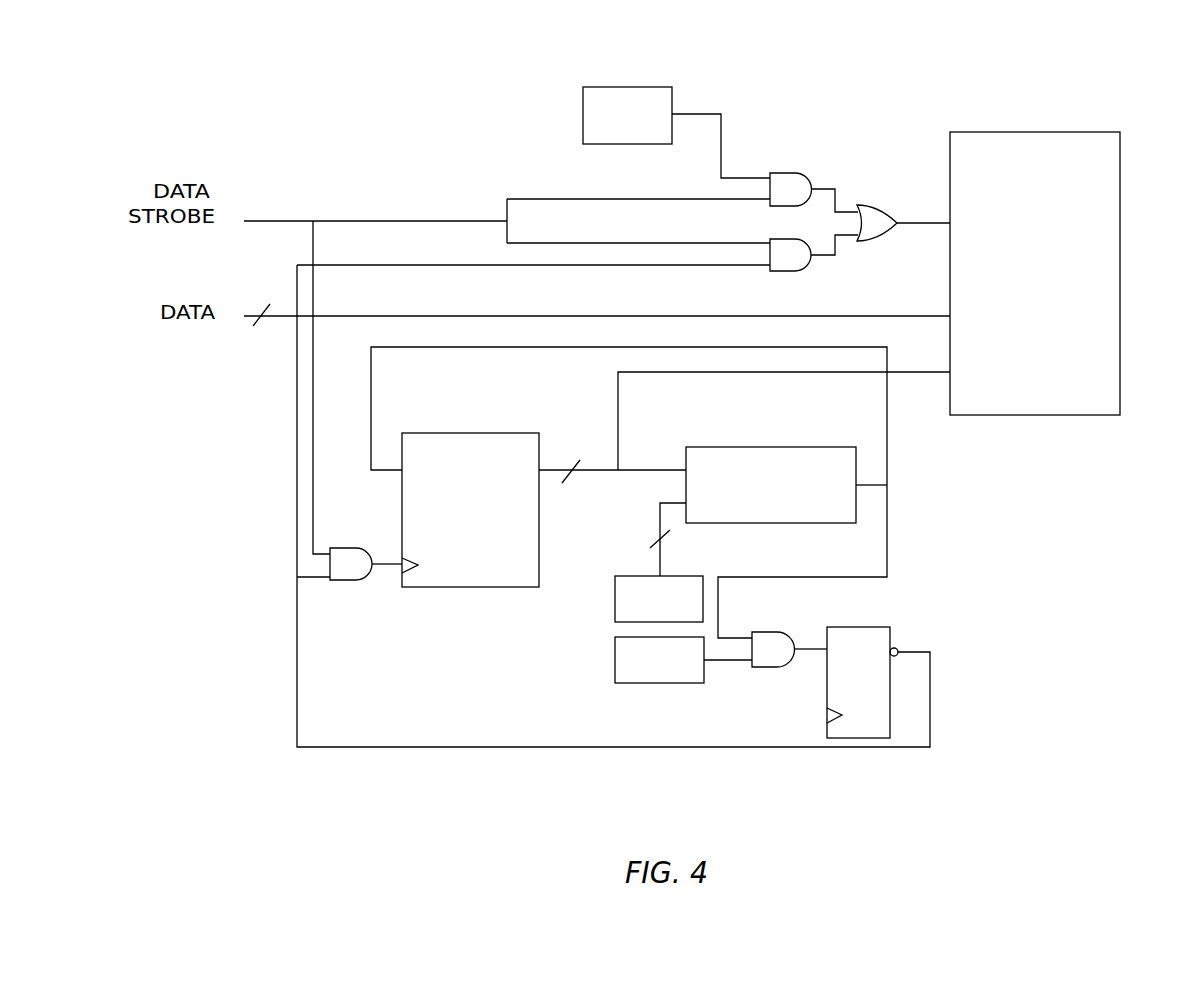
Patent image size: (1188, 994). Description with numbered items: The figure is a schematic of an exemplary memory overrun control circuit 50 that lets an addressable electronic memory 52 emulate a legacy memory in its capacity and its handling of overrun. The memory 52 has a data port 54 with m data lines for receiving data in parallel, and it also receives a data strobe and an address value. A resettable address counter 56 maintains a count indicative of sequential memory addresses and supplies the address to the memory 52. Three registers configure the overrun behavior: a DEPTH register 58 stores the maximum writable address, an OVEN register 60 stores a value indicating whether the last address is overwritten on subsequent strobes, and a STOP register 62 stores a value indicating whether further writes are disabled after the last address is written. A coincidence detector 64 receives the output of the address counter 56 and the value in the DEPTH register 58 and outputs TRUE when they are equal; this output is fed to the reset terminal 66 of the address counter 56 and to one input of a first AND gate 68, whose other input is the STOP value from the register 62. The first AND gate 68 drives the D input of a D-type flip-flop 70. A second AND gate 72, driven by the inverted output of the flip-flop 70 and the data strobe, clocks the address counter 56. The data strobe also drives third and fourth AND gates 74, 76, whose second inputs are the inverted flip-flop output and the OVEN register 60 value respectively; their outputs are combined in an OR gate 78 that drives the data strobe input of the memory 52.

The memory overrun control circuit 50 is at (927, 47).
The addressable electronic memory 52 is at (1082, 132).
The data port 54 is at (943, 316).
The resettable address counter 56 is at (457, 433).
The first register (DEPTH register) 58 is at (685, 577).
The second register (OVEN register) 60 is at (630, 86).
The third register (STOP register) 62 is at (663, 683).
The coincidence detector 64 is at (732, 447).
The reset terminal 66 is at (397, 475).
The first AND gate 68 is at (767, 632).
The D-type flip-flop 70 is at (872, 627).
The second AND gate 72 is at (353, 583).
The third AND gate 74 is at (798, 270).
The fourth AND gate 76 is at (787, 170).
The OR gate 78 is at (870, 205).